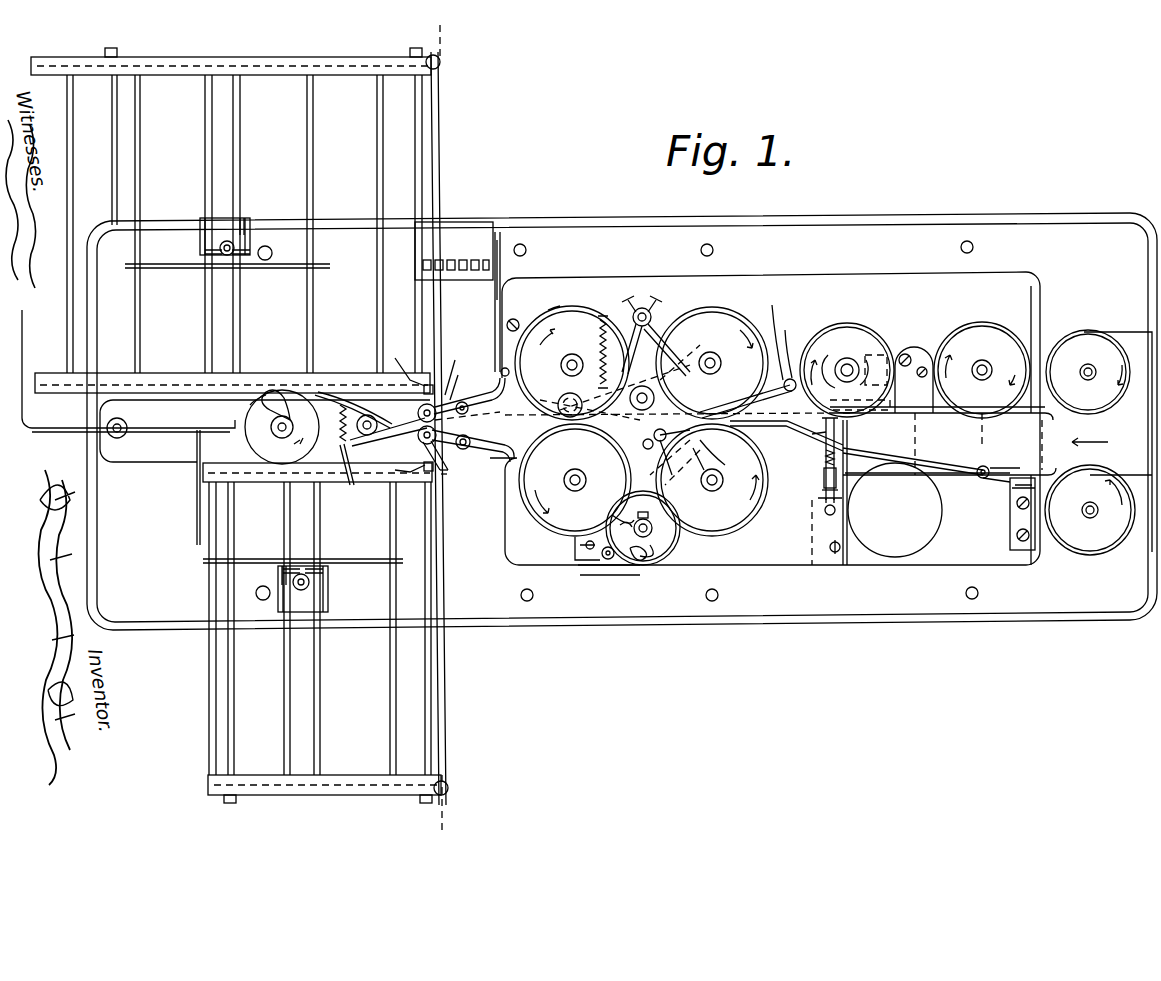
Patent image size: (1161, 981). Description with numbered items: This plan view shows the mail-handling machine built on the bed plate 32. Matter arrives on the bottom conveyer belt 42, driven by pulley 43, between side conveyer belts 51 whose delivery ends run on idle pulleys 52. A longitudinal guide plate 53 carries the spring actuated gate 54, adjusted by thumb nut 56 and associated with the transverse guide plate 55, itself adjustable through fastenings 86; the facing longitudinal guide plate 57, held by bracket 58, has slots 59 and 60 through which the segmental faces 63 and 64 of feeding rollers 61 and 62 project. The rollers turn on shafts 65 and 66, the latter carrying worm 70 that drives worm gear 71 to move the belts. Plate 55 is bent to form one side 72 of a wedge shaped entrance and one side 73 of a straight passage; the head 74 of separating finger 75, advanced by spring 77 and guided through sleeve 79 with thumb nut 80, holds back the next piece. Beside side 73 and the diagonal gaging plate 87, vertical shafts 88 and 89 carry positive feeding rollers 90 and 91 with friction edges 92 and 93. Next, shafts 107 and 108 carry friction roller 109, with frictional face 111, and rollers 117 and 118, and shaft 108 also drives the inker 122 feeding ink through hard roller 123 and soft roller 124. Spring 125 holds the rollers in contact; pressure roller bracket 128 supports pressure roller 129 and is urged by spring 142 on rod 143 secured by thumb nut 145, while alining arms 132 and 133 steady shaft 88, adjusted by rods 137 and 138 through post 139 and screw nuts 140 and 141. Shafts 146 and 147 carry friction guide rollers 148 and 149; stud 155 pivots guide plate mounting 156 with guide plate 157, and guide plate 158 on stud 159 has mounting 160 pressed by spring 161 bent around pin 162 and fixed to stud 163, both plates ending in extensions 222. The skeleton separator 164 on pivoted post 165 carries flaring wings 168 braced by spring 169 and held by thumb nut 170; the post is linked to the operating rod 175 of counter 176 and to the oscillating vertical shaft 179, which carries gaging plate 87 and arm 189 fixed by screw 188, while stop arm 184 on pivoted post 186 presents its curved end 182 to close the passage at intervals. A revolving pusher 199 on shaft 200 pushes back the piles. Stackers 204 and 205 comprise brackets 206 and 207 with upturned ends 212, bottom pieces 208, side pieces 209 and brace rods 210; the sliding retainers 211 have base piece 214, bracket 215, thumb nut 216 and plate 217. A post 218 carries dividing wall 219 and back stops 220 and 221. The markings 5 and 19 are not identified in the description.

The guide rail 5 is at (978, 322).
The section line 19 is at (447, 425).
The bed plate 32 is at (622, 421).
The bottom conveyer belt 42 is at (1098, 453).
The driving pulley 43 is at (880, 478).
The side conveyer belts 51 is at (1125, 330).
The idle pulleys 52 is at (1090, 442).
The longitudinal guide plate 53 is at (983, 480).
The spring actuated gate 54 is at (924, 458).
The transverse guide plate 55 is at (848, 552).
The thumb nut 56 is at (1012, 492).
The longitudinal guide plate 57 is at (1014, 415).
The bracket 58 is at (914, 380).
The slot 59 is at (978, 415).
The slot 60 is at (848, 420).
The feeding roller 61 is at (976, 360).
The feeding roller 62 is at (847, 358).
The segmental projecting face 63 is at (958, 330).
The segmental projecting face 64 is at (847, 358).
The shaft 65 is at (990, 352).
The shaft 66 is at (840, 364).
The worm 70 is at (860, 362).
The worm gear 71 is at (890, 385).
The side of wedge shaped entrance 72 is at (815, 438).
The side of straight passage 73 is at (764, 428).
The head 74 is at (826, 424).
The separating finger 75 is at (824, 455).
The spring 77 is at (822, 474).
The sleeve 79 is at (824, 482).
The thumb nut 80 is at (818, 498).
The fastenings 86 is at (829, 548).
The gaging plate 87 is at (760, 400).
The vertical shaft 88 is at (712, 354).
The vertical shaft 89 is at (712, 490).
The positive feeding roller 90 is at (690, 320).
The positive feeding roller 91 is at (697, 527).
The friction edge 92 is at (715, 312).
The friction edge 93 is at (720, 532).
The vertical shaft 107 is at (561, 365).
The vertical shaft 108 is at (580, 486).
The friction roller 109 is at (572, 363).
The circumferential frictional face 111 is at (560, 304).
The friction roller 117 is at (575, 480).
The friction roller 118 is at (530, 440).
The inker 122 is at (643, 528).
The hard roller 123 is at (606, 560).
The soft roller 124 is at (576, 548).
The spring 125 is at (700, 360).
The pressure roller bracket 128 is at (612, 425).
The pressure roller 129 is at (565, 398).
The alining arm 132 is at (648, 385).
The alining arm 133 is at (600, 350).
The rod 137 is at (643, 349).
The rod 138 is at (640, 335).
The post 139 is at (668, 340).
The screw nut 140 is at (632, 300).
The screw nut 141 is at (656, 302).
The spring 142 is at (598, 330).
The rod 143 is at (604, 320).
The thumb nut 145 is at (600, 316).
The shaft 146 is at (420, 410).
The shaft 147 is at (410, 443).
The friction guide rollers 148 is at (463, 367).
The friction guide roller 149 is at (445, 472).
The stud 155 is at (470, 448).
The guide plate mounting 156 is at (461, 465).
The guide plate 157 is at (461, 481).
The guide plate 158 is at (460, 420).
The stud 159 is at (462, 402).
The mounting 160 is at (467, 377).
The spring 161 is at (486, 398).
The pin 162 is at (503, 368).
The stud 163 is at (507, 323).
The skeleton separator 164 is at (375, 410).
The pivoted post 165 is at (388, 439).
The flaring wings 168 is at (318, 392).
The spring 169 is at (351, 475).
The thumb nut 170 is at (341, 404).
The operating rod 175 is at (497, 296).
The counter 176 is at (454, 251).
The vertical shaft 179 is at (791, 344).
The curved end 182 is at (700, 460).
The stop arm 184 is at (644, 460).
The pivoted post 186 is at (659, 452).
The screw 188 is at (789, 378).
The arm 189 is at (782, 332).
The revolving pusher 199 is at (282, 418).
The vertical shaft 200 is at (282, 427).
The stacker 204 is at (342, 125).
The stacker 205 is at (359, 698).
The horizontal bracket 206 is at (172, 373).
The horizontal bracket 207 is at (268, 75).
The longitudinal bottom pieces 208 is at (134, 142).
The longitudinal side pieces 209 is at (437, 130).
The brace rods 210 is at (70, 116).
The follower heads 211 is at (200, 222).
The upwardly projecting ends 212 is at (440, 66).
The base piece 214 is at (248, 222).
The bracket 215 is at (205, 252).
The thumb nut 216 is at (252, 246).
The plate 217 is at (268, 270).
The post 218 is at (125, 434).
The dividing wall 219 is at (176, 432).
The back stop 220 is at (22, 350).
The back stop 221 is at (196, 482).
The extensions 222 is at (411, 402).